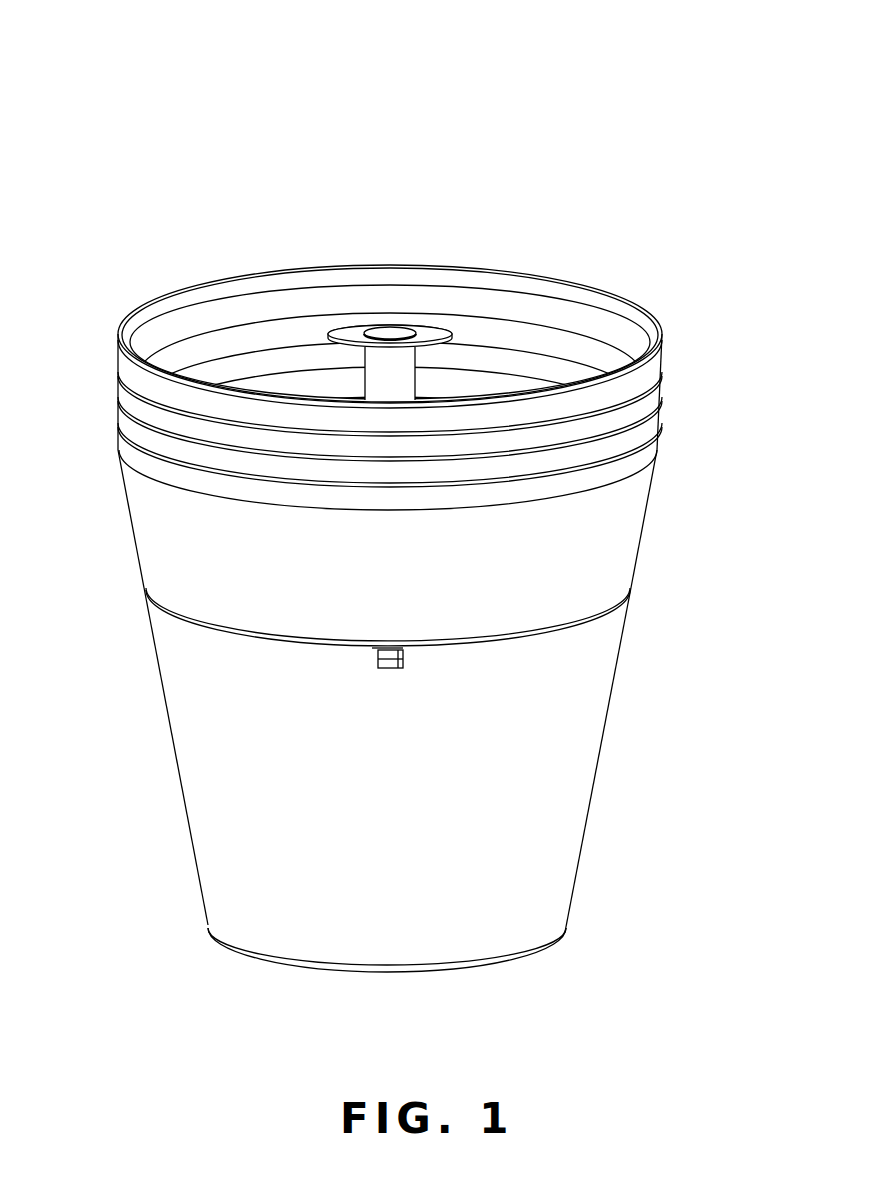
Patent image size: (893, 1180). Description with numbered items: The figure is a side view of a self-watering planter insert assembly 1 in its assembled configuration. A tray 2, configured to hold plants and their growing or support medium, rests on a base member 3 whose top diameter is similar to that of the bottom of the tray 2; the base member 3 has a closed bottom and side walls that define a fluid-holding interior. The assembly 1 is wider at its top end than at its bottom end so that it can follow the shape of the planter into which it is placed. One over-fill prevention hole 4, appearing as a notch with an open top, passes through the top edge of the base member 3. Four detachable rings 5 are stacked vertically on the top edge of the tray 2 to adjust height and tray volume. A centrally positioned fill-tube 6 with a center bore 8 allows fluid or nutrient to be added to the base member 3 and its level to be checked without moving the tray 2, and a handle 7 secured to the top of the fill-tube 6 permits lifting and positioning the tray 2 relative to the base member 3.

The planter insert assembly 1 is at (128, 122).
The tray 2 is at (607, 545).
The base member 3 is at (550, 775).
The over-fill prevention hole 4 is at (368, 655).
The rings 5 is at (88, 445).
The fill-tube 6 is at (398, 380).
The handle 7 is at (338, 331).
The center bore 8 is at (391, 330).